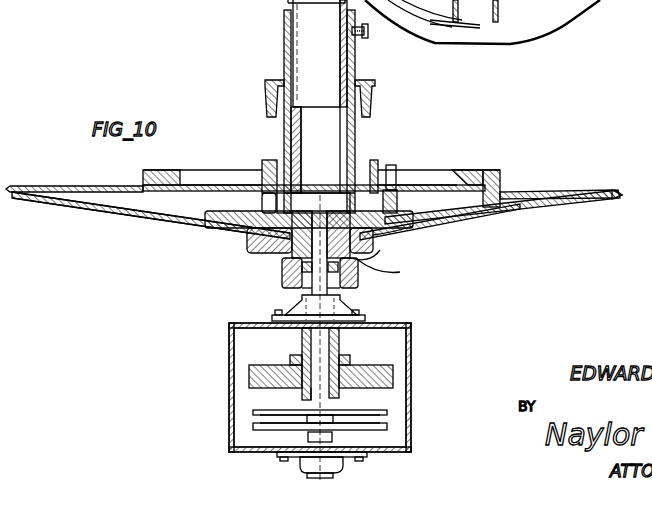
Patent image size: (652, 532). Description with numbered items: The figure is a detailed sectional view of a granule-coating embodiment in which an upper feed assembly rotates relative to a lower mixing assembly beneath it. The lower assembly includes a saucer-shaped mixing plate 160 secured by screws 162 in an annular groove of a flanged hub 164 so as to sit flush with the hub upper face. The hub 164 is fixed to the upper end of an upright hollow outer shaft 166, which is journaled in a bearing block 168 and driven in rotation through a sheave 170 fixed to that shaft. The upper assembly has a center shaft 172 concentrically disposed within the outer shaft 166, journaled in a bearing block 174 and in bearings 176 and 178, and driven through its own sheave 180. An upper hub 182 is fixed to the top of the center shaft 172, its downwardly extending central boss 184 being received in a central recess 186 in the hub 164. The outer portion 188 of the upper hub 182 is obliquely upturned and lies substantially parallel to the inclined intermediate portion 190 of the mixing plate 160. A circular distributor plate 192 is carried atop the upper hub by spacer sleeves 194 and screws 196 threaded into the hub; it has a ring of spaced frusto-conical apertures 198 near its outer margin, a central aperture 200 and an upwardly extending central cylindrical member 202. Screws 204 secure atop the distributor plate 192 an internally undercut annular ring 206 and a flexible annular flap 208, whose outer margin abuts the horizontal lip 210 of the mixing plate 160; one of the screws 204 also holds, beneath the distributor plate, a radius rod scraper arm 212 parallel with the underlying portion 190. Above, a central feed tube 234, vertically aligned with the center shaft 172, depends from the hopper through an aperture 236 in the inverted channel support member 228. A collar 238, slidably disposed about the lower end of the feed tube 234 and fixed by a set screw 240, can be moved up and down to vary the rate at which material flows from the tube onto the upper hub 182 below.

The mixing plate 160 is at (150, 222).
The screws 162 is at (375, 250).
The flanged hub 164 is at (285, 272).
The outer shaft 166 is at (340, 340).
The bearing block 168 is at (345, 306).
The sheave 170 is at (282, 366).
The center shaft 172 is at (330, 400).
The bearing block 174 is at (340, 468).
The bearing 176 is at (300, 264).
The bearing 178 is at (308, 400).
The sheave 180 is at (280, 426).
The upper hub 182 is at (400, 224).
The central boss 184 is at (365, 252).
The central recess 186 is at (365, 260).
The outer portion 188 is at (230, 228).
The intermediate portion 190 is at (125, 212).
The distributor plate 192 is at (400, 186).
The spacer sleeves 194 is at (262, 205).
The screws 196 is at (403, 158).
The frusto-conical apertures 198 is at (143, 190).
The central aperture 200 is at (275, 160).
The cylindrical member 202 is at (372, 162).
The screws 204 is at (495, 172).
The annular ring 206 is at (470, 172).
The flexible annular flap 208 is at (545, 192).
The horizontal lip 210 is at (618, 196).
The radius rod scraper arm 212 is at (495, 236).
The inverted channel support member 228 is at (265, 82).
The central feed tube 234 is at (338, 100).
The aperture 236 is at (357, 72).
The collar 238 is at (284, 50).
The set screw 240 is at (388, 44).